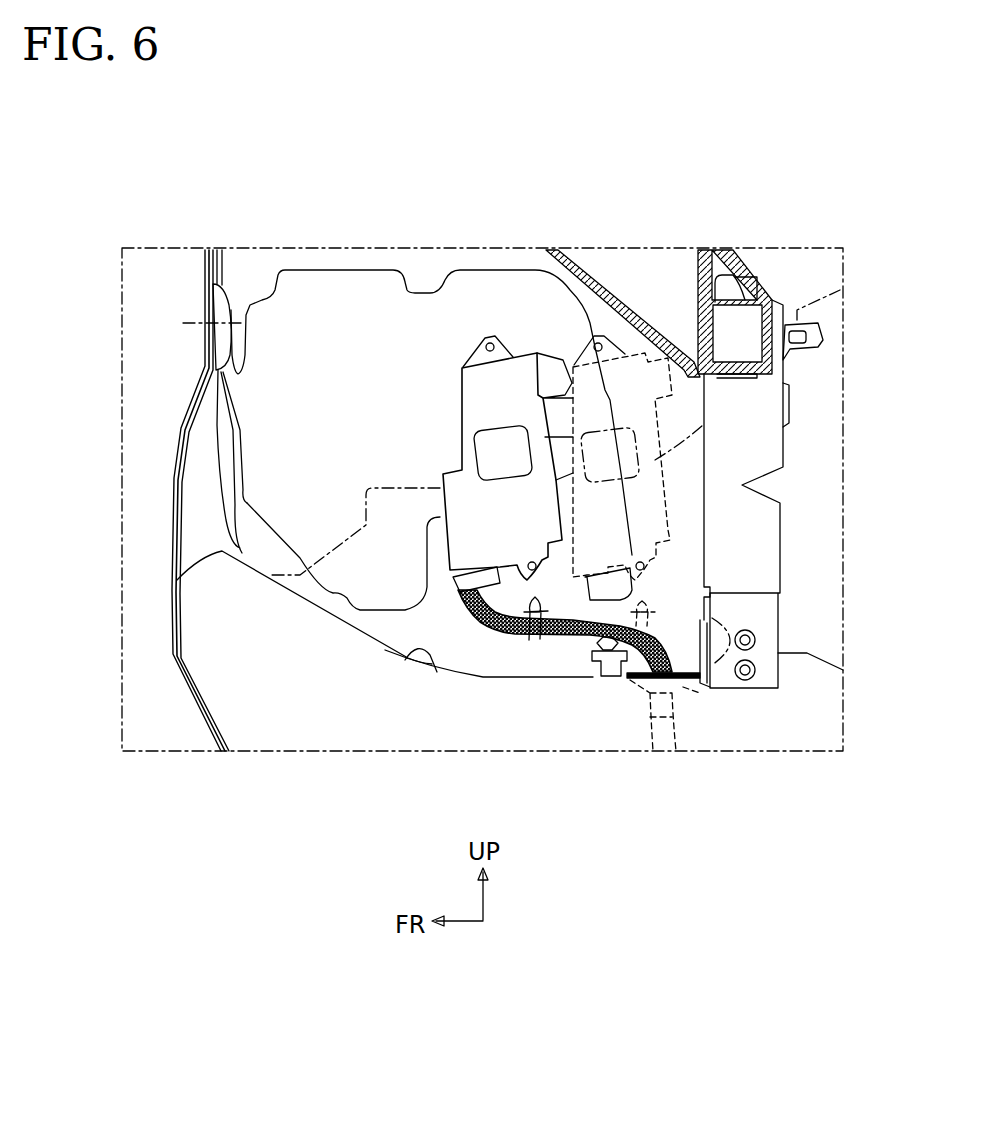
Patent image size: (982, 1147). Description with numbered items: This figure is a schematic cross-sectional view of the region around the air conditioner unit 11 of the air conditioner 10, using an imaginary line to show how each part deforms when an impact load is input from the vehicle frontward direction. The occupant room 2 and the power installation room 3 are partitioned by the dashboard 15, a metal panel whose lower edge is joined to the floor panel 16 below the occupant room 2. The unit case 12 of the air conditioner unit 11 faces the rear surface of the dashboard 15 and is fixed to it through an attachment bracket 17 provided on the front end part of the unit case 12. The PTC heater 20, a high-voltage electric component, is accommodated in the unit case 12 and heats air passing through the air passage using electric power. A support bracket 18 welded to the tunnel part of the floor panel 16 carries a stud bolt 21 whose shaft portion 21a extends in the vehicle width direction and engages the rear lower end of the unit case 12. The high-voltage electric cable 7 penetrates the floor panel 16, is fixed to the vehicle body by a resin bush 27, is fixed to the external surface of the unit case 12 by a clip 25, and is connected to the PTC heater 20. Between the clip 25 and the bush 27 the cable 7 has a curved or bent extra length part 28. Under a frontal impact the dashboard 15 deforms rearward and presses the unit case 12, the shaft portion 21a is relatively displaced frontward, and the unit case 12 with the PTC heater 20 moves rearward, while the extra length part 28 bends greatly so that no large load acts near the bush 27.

The occupant room 2 is at (818, 422).
The power installation room 3 is at (157, 268).
The high-voltage electric cable 7 is at (673, 598).
The air conditioner 10 is at (431, 383).
The air conditioner unit 11 is at (490, 262).
The unit case 12 is at (576, 328).
The dashboard 15 is at (170, 465).
The floor panel 16 is at (428, 662).
The attachment bracket 17 is at (228, 303).
The support bracket 18 is at (613, 674).
The PTC heater 20 is at (460, 368).
The stud bolt 21 is at (592, 756).
The shaft portion 21a is at (598, 682).
The clip 25 is at (647, 600).
The bush 27 is at (665, 680).
The extra length part 28 is at (650, 662).